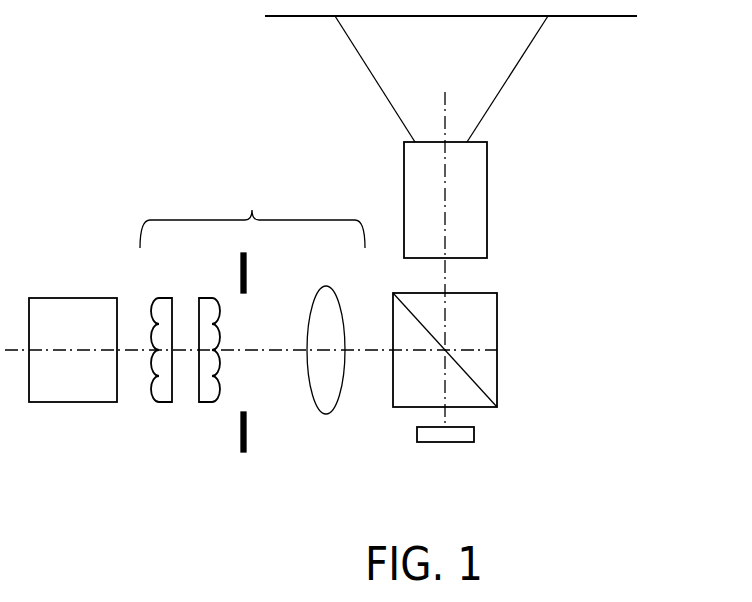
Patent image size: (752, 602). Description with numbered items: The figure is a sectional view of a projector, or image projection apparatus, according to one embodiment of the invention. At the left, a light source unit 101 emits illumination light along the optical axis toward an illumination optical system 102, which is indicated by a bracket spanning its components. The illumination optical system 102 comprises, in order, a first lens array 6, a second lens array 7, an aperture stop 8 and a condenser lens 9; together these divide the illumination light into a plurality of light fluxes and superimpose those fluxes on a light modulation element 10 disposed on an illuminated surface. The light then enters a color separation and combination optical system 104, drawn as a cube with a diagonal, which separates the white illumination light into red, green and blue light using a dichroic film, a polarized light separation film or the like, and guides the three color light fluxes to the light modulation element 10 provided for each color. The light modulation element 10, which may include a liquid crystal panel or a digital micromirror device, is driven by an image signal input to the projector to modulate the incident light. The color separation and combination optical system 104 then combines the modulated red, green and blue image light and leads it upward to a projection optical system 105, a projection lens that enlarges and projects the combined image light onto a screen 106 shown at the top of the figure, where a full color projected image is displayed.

The light source unit 101 is at (73, 402).
The first lens array 6 is at (165, 403).
The second lens array 7 is at (210, 403).
The aperture stop 8 is at (247, 432).
The condenser lens 9 is at (326, 413).
The illumination optical system 102 is at (252, 212).
The color separation and combination optical system 104 is at (497, 350).
The projection optical system 105 is at (487, 198).
The light modulation element 10 is at (445, 442).
The screen 106 is at (601, 16).